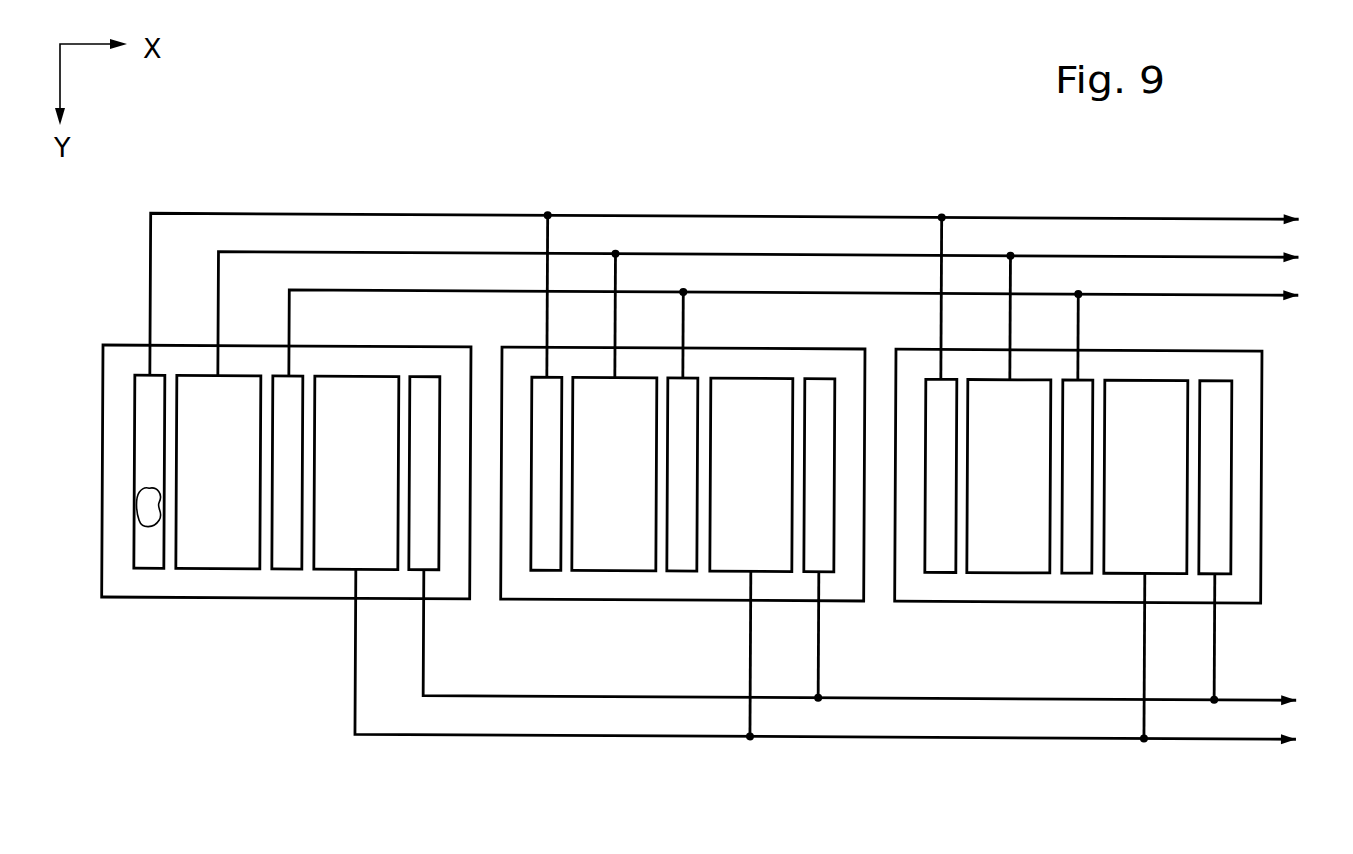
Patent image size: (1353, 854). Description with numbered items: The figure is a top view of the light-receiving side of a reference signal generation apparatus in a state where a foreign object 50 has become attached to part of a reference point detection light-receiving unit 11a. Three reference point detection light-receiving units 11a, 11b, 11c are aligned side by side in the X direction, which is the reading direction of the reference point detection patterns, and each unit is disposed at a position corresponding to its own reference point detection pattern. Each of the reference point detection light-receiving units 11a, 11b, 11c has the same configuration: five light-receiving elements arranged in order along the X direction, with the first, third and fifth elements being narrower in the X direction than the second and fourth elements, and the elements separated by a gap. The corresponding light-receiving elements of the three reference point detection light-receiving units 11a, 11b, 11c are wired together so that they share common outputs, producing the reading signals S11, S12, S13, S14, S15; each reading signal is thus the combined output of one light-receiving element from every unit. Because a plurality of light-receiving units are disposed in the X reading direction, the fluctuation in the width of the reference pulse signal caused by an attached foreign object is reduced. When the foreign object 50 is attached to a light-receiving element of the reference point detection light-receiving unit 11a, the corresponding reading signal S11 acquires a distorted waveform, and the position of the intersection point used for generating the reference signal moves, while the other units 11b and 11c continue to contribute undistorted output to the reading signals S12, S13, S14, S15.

The foreign object 50 is at (150, 513).
The reference point detection light-receiving unit 11a is at (223, 600).
The reference point detection light-receiving unit 11b is at (533, 600).
The reference point detection light-receiving unit 11c is at (927, 598).
The reading signal S11 is at (747, 289).
The reading signal S12 is at (781, 309).
The reading signal S13 is at (816, 328).
The reading signal S14 is at (882, 643).
The reading signal S15 is at (848, 661).